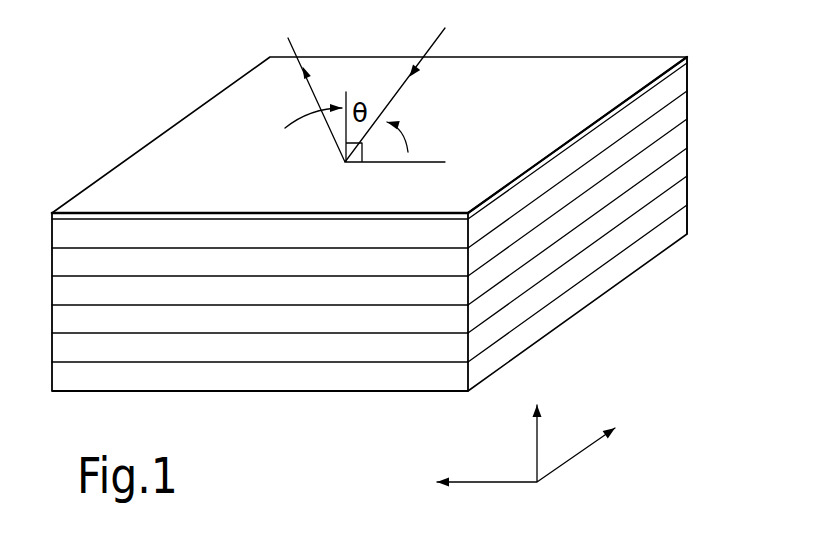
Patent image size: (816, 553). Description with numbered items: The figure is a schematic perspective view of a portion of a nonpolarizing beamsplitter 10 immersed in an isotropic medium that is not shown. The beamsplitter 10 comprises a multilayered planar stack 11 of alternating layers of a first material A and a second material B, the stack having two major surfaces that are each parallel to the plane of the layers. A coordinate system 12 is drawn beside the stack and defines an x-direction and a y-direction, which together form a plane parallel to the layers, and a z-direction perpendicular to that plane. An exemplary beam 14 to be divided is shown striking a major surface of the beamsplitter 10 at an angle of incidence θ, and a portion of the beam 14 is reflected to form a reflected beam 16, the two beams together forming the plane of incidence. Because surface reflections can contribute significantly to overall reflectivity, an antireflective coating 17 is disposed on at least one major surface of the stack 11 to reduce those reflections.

The nonpolarizing beamsplitter 10 is at (510, 83).
The multilayered planar stack 11 is at (695, 65).
The coordinate system 12 is at (493, 483).
The beam 14 is at (428, 50).
The reflected beam 16 is at (292, 53).
The antireflective coating 17 is at (643, 62).